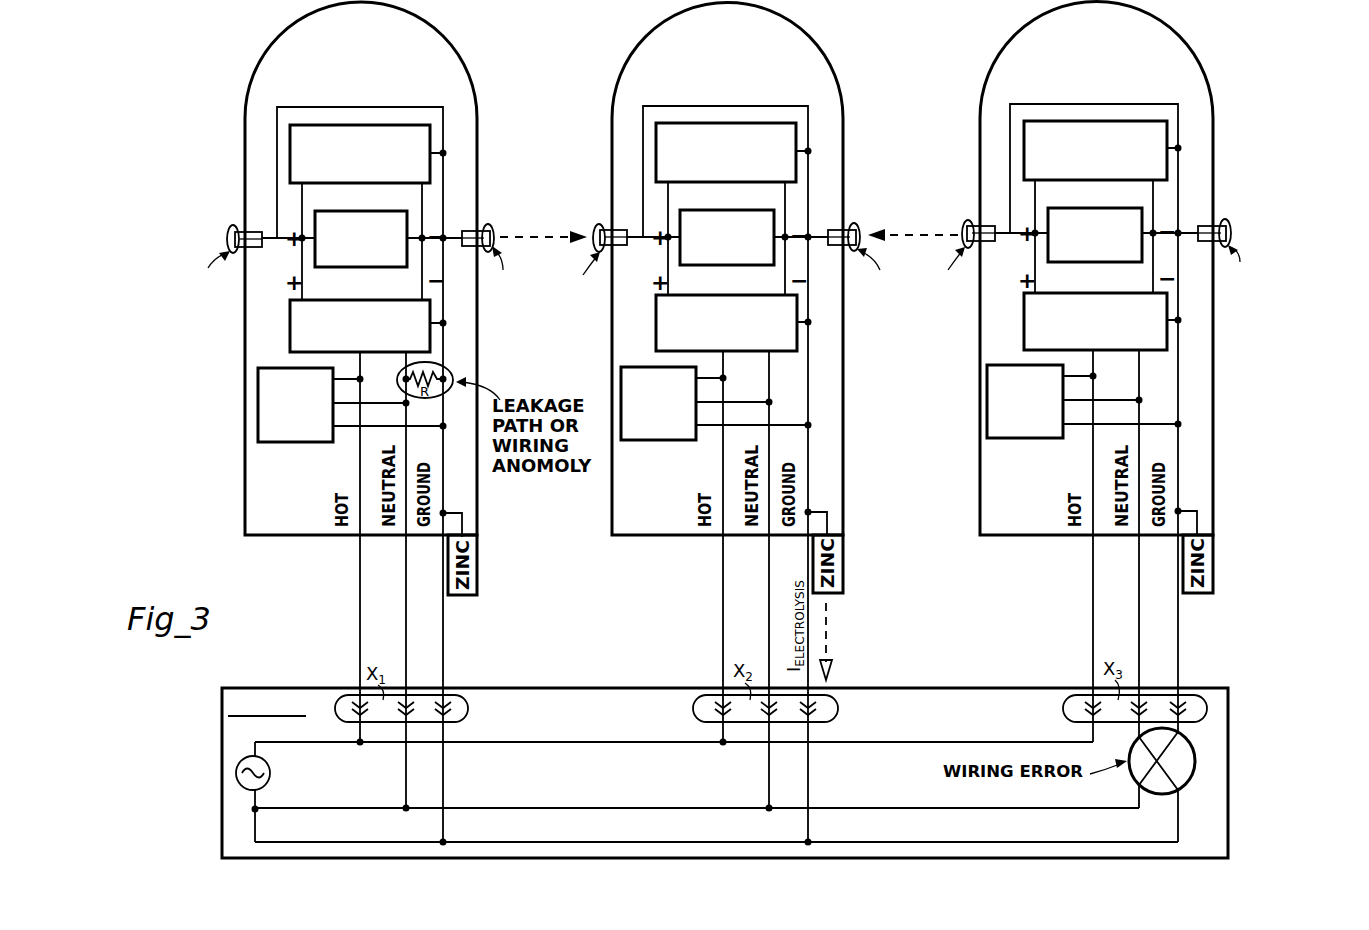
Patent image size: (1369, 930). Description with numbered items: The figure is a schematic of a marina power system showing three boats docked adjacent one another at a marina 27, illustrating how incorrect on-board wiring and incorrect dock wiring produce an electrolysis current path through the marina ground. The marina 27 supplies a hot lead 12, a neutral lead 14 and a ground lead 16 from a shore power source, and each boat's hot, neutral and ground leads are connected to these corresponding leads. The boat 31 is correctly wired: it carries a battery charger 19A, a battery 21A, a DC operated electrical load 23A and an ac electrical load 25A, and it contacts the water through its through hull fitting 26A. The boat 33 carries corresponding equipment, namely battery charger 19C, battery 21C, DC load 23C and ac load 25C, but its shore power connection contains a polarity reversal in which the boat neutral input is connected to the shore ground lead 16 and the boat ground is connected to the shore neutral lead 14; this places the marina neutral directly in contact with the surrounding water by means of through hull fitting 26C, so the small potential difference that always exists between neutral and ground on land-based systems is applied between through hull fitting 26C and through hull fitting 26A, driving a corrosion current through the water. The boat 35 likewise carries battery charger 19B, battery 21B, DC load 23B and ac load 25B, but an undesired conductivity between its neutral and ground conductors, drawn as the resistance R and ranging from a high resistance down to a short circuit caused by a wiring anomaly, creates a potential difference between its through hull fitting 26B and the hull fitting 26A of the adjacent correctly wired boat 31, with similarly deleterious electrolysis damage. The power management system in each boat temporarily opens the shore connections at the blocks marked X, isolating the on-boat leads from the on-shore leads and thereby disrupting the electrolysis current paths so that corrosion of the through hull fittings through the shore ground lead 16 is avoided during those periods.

The boat with wiring anomaly 35 is at (377, 41).
The correctly wired boat 31 is at (732, 39).
The boat with dock wiring error 33 is at (1102, 38).
The through hull fitting 26B is at (228, 231).
The through hull fitting 26A is at (598, 224).
The through hull fitting 26C is at (968, 220).
The DC load 23B is at (368, 184).
The DC operated electrical load 23A is at (735, 183).
The DC load 23C is at (1103, 181).
The battery 21B is at (380, 268).
The battery 21A is at (745, 266).
The battery 21C is at (1113, 263).
The battery charger 19B is at (290, 335).
The battery charger 19A is at (656, 335).
The battery charger 19C is at (1024, 335).
The AC load 25B is at (320, 444).
The ac electrical load 25A is at (682, 442).
The ac load 25C is at (1049, 440).
The marina 27 is at (281, 688).
The hot lead 12 is at (608, 740).
The neutral lead 14 is at (608, 807).
The ground lead 16 is at (651, 840).